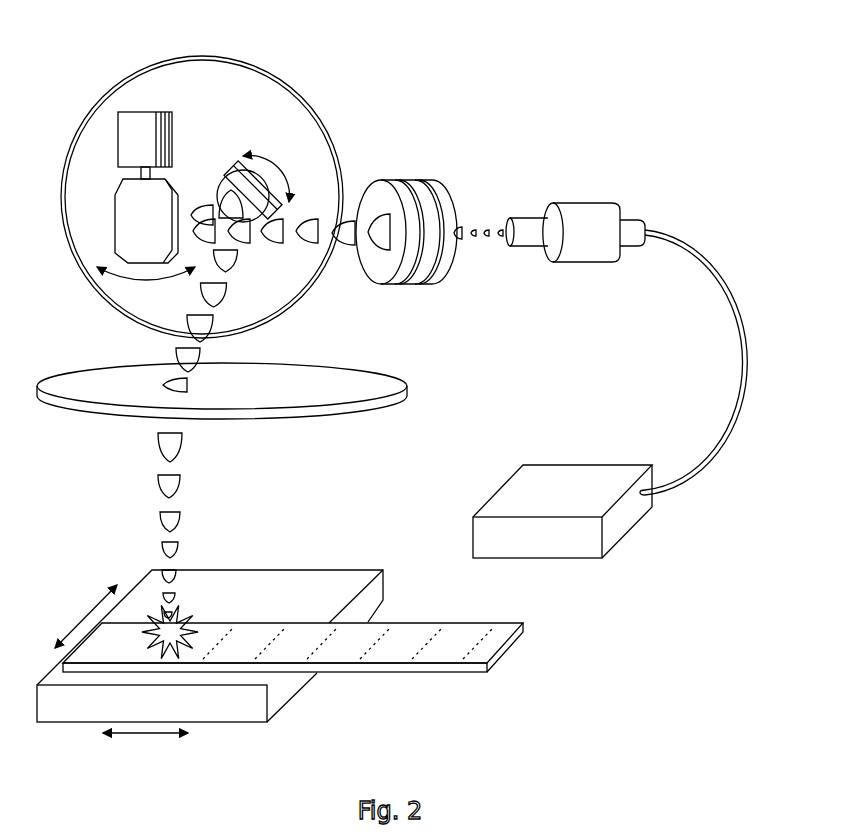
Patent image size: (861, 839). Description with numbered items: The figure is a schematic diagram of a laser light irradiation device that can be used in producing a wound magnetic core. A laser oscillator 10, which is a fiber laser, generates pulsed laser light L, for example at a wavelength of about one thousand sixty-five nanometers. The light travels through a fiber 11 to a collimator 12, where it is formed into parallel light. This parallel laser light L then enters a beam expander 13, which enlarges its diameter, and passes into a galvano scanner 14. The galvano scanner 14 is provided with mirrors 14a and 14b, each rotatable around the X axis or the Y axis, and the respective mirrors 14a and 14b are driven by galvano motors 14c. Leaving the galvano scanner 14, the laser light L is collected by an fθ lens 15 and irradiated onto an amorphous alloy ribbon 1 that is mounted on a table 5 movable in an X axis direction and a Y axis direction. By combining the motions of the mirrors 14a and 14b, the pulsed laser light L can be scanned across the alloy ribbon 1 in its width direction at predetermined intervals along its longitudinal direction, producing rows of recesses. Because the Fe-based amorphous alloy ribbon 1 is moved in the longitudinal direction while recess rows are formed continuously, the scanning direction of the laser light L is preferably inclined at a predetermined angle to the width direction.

The amorphous alloy ribbon 1 is at (415, 632).
The table 5 is at (277, 570).
The laser oscillator 10 is at (575, 475).
The fiber 11 is at (760, 336).
The collimator 12 is at (578, 205).
The beam expander 13 is at (399, 180).
The galvano scanner 14 is at (305, 92).
The mirror 14a is at (133, 222).
The mirror 14b is at (219, 182).
The galvano motor 14c is at (132, 138).
The fθ lens 15 is at (353, 382).
The pulsed laser light L is at (157, 448).